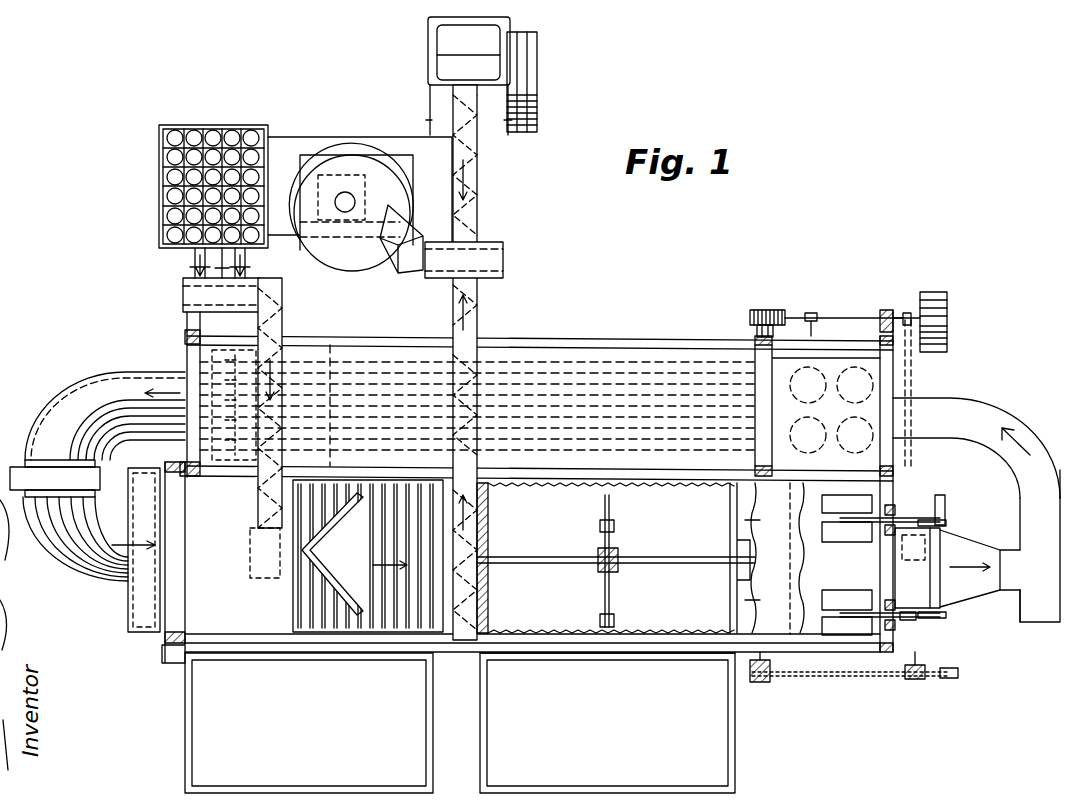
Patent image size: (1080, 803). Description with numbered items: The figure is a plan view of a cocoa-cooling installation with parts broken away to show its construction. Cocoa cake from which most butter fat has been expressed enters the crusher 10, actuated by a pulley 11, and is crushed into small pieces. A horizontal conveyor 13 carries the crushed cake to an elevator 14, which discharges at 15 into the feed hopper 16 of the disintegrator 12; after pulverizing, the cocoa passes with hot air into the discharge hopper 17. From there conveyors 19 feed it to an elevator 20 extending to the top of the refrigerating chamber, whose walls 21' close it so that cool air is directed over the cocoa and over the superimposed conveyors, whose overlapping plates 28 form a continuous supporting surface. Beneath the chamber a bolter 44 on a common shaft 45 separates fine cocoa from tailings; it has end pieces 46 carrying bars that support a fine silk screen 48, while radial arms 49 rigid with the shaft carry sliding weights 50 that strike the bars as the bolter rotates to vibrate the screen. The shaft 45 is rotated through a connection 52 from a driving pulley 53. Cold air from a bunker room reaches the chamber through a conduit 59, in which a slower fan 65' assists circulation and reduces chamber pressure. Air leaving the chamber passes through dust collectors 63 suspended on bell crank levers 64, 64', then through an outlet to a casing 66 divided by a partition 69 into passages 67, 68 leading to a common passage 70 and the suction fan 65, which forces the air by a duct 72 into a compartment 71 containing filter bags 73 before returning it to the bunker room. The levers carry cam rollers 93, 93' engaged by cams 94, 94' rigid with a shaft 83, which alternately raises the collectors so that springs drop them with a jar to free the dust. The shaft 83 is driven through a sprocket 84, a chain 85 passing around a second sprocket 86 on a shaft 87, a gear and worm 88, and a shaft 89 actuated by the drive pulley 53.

The crusher 10 is at (442, 47).
The pulley 11 is at (537, 108).
The disintegrator 12 is at (303, 138).
The conveyor 13 is at (470, 217).
The elevator 14 is at (480, 262).
The discharge of elevator 15 is at (1043, 623).
The feed hopper 16 is at (352, 266).
The discharge hopper 17 is at (160, 176).
The conveyors 19 is at (193, 263).
The elevator 20 is at (283, 322).
The walls 21' is at (477, 502).
The plates 28 is at (380, 614).
The bolter 44 is at (624, 558).
The shaft 45 is at (669, 562).
The end pieces 46 is at (490, 582).
The screen 48 is at (665, 636).
The radial arms 49 is at (611, 505).
The weights 50 is at (614, 527).
The connection 52 is at (907, 365).
The driving pulley 53 is at (942, 302).
The conduit 59 is at (108, 385).
The dust collector 63 is at (835, 505).
The bell crank lever 64 is at (890, 671).
The bell crank lever 64' is at (906, 491).
The suction fan 65 is at (1007, 554).
The fan 65' is at (52, 443).
The casing 66 is at (960, 538).
The passage 67 is at (925, 586).
The passage 68 is at (942, 524).
The partition 69 is at (915, 567).
The common passage 70 is at (985, 595).
The compartment 71 is at (828, 370).
The duct 72 is at (990, 415).
The filter bags 73 is at (865, 420).
The shaft 83 is at (925, 680).
The sprocket 84 is at (915, 681).
The chain 85 is at (945, 680).
The second sprocket 86 is at (760, 684).
The shaft 87 is at (757, 329).
The gear and worm 88 is at (778, 312).
The shaft 89 is at (840, 316).
The cam roller 93 is at (907, 630).
The cam roller 93' is at (1065, 465).
The cam 94 is at (938, 632).
The cam 94' is at (938, 507).